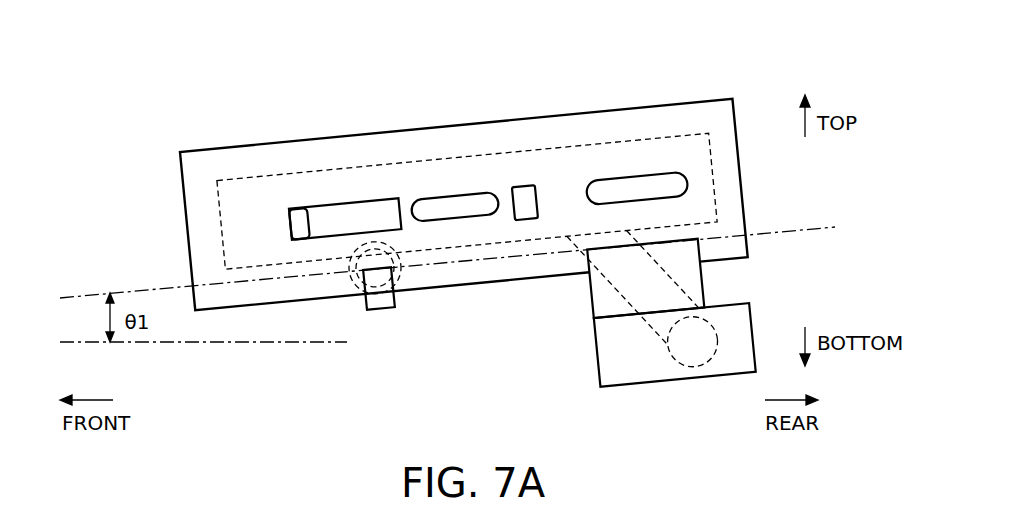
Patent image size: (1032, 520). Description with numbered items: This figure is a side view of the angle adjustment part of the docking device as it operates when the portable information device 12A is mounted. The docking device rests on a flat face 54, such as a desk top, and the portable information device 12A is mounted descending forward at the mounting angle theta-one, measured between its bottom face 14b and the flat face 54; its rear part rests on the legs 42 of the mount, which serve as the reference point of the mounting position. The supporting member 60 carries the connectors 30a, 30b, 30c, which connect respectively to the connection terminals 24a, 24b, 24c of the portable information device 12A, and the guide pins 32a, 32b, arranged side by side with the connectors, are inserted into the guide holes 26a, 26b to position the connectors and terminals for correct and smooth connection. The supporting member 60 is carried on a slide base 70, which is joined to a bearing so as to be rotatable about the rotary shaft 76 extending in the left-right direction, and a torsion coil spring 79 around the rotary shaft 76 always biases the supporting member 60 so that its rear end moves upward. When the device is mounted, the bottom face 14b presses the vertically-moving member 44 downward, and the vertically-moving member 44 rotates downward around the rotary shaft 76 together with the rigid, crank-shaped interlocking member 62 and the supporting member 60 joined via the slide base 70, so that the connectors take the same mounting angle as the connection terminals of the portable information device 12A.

The supporting member 60 is at (204, 140).
The slide base 70 is at (692, 133).
The connector 30a is at (364, 147).
The connection terminal 24a is at (390, 205).
The guide pin 32a is at (294, 150).
The guide hole 26a is at (298, 213).
The connector 30b is at (455, 114).
The connection terminal 24b is at (470, 197).
The guide pin 32b is at (538, 130).
The guide hole 26b is at (528, 188).
The connector 30c is at (637, 117).
The connection terminal 24c is at (637, 183).
The torsion coil spring 79 is at (370, 244).
The rotary shaft 76 is at (393, 266).
The leg 42 is at (383, 301).
The vertically-moving member 44 is at (680, 268).
The interlocking member 62 is at (644, 328).
The bottom face 14b is at (468, 262).
The portable information device 12A is at (468, 262).
The flat face 54 is at (187, 343).